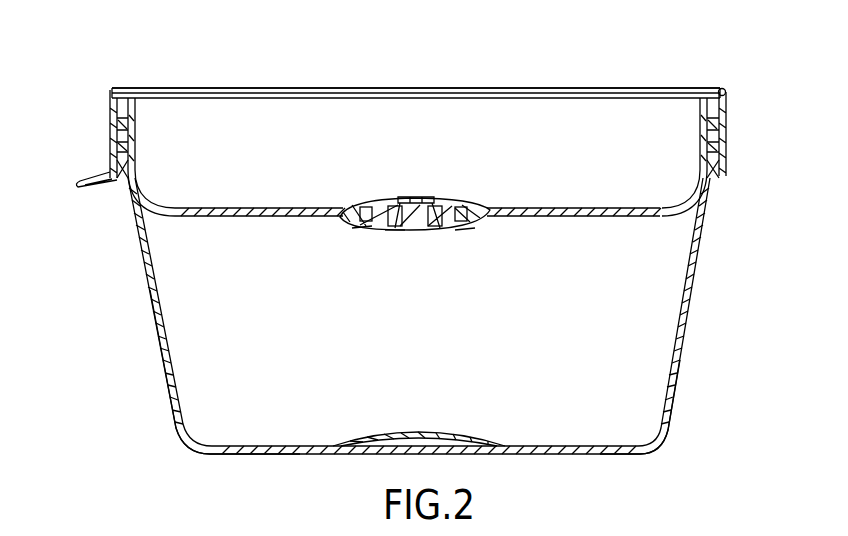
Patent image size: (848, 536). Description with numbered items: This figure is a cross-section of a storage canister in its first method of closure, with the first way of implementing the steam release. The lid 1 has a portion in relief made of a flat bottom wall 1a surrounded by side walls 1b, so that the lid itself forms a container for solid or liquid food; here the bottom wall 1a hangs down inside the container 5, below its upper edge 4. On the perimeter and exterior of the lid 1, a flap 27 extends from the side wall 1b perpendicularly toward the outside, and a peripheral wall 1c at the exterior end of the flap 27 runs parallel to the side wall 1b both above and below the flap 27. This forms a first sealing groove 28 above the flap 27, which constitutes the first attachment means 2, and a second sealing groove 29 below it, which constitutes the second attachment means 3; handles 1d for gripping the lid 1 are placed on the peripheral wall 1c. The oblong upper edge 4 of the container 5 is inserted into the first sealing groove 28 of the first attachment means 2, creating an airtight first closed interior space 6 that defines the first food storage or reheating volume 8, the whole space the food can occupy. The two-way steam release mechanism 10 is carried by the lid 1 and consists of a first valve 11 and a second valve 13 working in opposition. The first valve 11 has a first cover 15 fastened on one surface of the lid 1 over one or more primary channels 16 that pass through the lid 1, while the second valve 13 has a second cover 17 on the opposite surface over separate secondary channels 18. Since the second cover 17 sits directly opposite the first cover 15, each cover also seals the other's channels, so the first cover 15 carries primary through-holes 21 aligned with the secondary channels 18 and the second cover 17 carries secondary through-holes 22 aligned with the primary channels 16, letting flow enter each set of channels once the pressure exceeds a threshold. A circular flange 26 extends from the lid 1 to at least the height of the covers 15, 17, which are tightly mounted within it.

The lid 1 is at (638, 87).
The bottom wall 1a is at (268, 213).
The side wall 1b is at (135, 172).
The peripheral wall 1c is at (112, 142).
The handle 1d is at (97, 176).
The first attachment means 2 is at (469, 290).
The first sealing groove 28 is at (726, 140).
The second attachment means 3 is at (458, 76).
The second sealing groove 29 is at (722, 90).
The upper edge 4 is at (122, 178).
The container 5 is at (665, 417).
The first closed interior space 6 is at (212, 381).
The first food storage or reheating volume 8 is at (203, 402).
The two-way steam release mechanism 10 is at (469, 262).
The first valve 11 is at (417, 190).
The second valve 13 is at (397, 243).
The first cover 15 is at (386, 203).
The primary channel 16 is at (367, 205).
The second cover 17 is at (465, 230).
The secondary channel 18 is at (467, 203).
The primary through-hole 21 is at (452, 200).
The secondary through-hole 22 is at (395, 232).
The flange 26 is at (372, 226).
The flap 27 is at (120, 128).